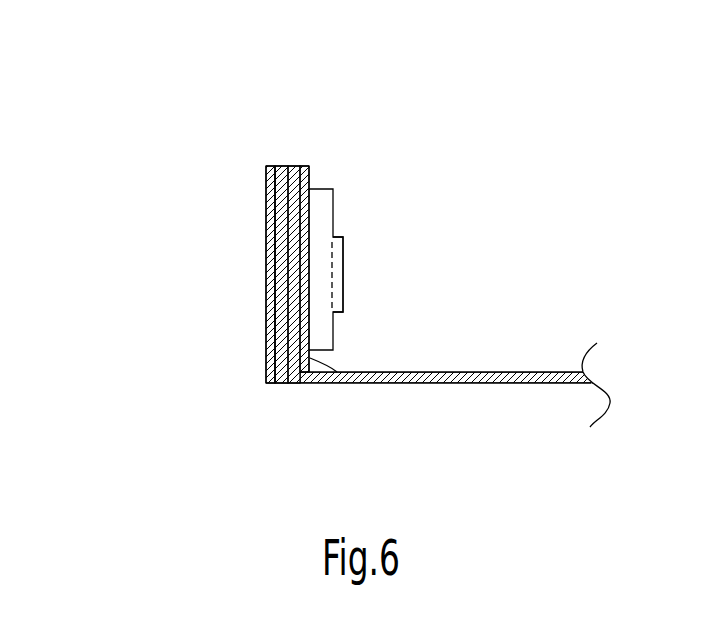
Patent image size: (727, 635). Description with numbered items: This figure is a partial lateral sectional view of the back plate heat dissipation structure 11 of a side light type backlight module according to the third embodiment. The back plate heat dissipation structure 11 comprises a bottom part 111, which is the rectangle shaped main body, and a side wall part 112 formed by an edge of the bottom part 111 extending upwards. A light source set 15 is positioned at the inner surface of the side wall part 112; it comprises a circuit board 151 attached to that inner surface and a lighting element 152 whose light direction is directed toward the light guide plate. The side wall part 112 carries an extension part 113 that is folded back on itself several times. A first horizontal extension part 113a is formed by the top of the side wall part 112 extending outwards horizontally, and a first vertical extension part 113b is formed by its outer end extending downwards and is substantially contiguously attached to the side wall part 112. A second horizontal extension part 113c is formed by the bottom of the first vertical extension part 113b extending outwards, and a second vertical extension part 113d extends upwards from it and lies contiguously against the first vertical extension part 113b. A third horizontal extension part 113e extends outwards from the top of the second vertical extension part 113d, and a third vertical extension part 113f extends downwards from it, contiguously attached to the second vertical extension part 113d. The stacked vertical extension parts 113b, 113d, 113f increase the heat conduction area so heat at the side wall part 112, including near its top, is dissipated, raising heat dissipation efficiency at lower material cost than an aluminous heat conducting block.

The back plate heat dissipation structure 11 is at (340, 258).
The bottom part 111 is at (493, 383).
The side wall part 112 is at (337, 372).
The extension part 113 is at (198, 258).
The first horizontal extension part 113a is at (300, 166).
The first vertical extension part 113b is at (282, 205).
The second horizontal extension part 113c is at (290, 384).
The second vertical extension part 113d is at (276, 253).
The third horizontal extension part 113e is at (273, 166).
The third vertical extension part 113f is at (270, 313).
The light source set 15 is at (403, 203).
The circuit board 151 is at (322, 207).
The lighting element 152 is at (343, 263).